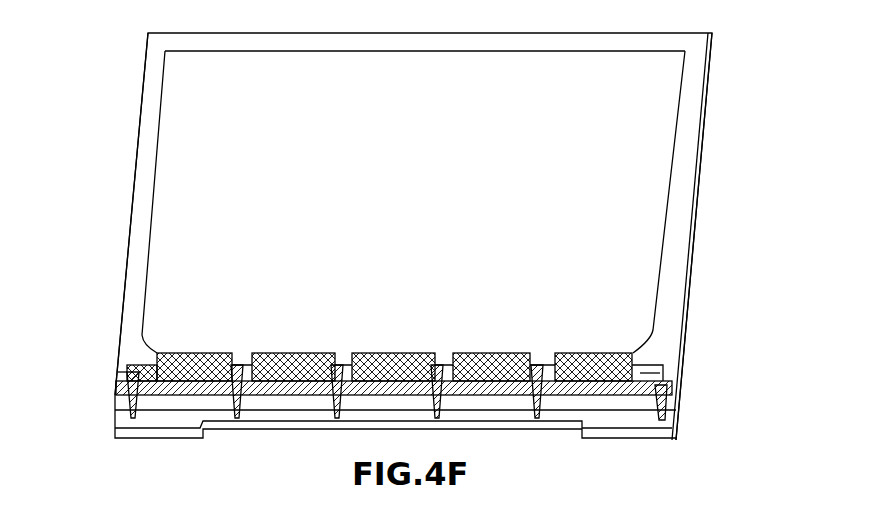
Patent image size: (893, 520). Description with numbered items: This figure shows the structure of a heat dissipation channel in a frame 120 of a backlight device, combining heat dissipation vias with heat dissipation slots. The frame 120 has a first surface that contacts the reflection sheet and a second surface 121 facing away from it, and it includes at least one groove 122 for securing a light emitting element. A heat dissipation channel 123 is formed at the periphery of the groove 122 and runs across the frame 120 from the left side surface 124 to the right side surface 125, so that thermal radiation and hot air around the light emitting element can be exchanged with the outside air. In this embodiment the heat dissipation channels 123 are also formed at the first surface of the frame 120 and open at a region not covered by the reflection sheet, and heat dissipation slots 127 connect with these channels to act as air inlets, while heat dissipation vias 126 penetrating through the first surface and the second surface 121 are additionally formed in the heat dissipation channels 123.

The frame 120 is at (142, 128).
The second surface 121 is at (682, 175).
The groove 122 is at (210, 358).
The heat dissipation channel 123 is at (118, 388).
The left side surface 124 is at (123, 283).
The right side surface 125 is at (688, 297).
The heat dissipation via 126 is at (130, 370).
The heat dissipation slot 127 is at (663, 405).